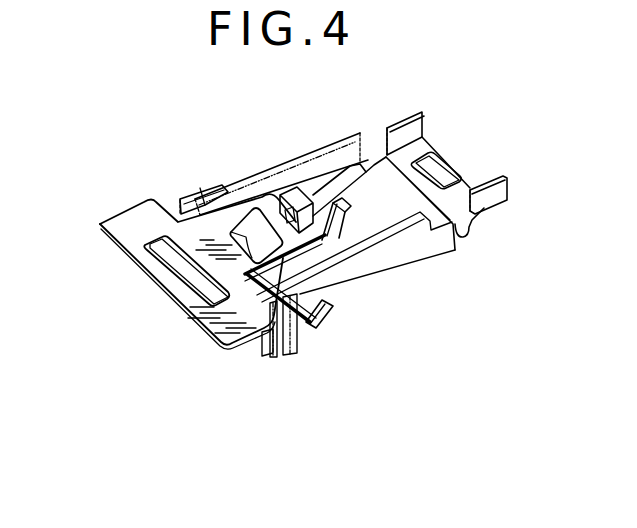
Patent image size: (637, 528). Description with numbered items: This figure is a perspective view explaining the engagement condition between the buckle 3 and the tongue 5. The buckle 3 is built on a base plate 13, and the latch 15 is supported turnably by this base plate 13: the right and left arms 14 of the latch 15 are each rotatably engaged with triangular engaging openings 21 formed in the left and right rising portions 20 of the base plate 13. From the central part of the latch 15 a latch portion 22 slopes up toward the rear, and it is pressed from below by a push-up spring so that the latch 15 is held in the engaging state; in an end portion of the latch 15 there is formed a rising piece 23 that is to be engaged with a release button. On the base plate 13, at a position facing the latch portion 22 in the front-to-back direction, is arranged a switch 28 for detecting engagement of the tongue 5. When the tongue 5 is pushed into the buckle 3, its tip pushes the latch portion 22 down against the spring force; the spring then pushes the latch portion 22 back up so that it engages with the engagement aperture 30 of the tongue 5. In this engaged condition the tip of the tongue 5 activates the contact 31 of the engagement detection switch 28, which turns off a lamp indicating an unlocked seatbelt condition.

The buckle 3 is at (466, 246).
The tongue 5 is at (123, 230).
The base plate 13 is at (289, 355).
The arms 14 is at (197, 198).
The latch 15 is at (336, 208).
The rising portions 20 is at (412, 250).
The engaging openings 21 is at (293, 330).
The latch portion 22 is at (253, 233).
The rising piece 23 is at (338, 246).
The switch 28 is at (293, 193).
The engagement aperture 30 is at (253, 262).
The contact 31 is at (322, 255).